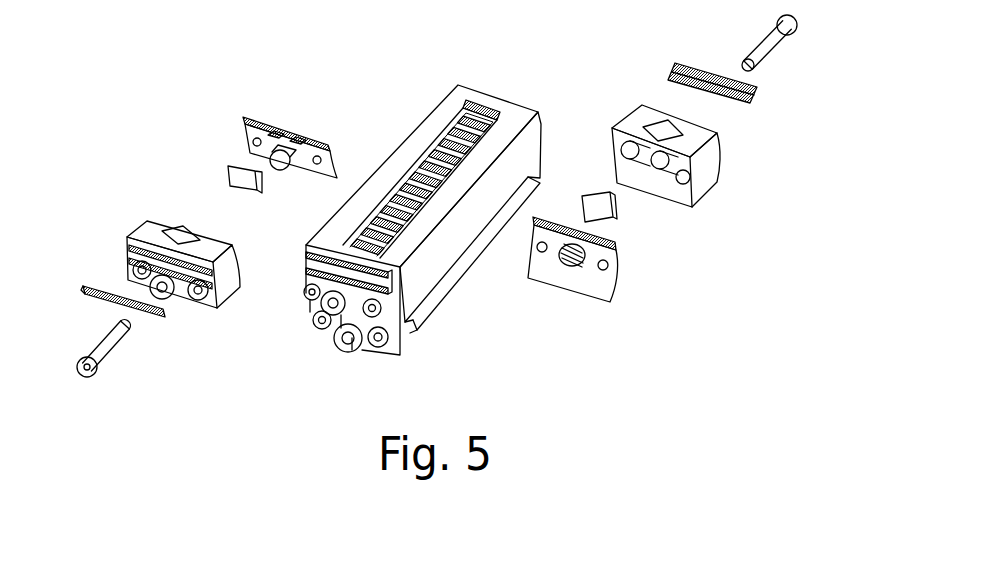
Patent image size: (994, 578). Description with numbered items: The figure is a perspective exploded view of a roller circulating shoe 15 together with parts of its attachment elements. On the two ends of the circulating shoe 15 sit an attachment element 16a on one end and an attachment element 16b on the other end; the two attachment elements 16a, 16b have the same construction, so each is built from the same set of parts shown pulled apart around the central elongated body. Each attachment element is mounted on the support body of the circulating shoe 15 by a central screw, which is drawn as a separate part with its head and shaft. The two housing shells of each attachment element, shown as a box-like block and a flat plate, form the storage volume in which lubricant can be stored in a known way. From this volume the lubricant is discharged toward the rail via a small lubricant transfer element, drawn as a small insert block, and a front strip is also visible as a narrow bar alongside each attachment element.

The circulating shoe 15 is at (500, 88).
The attachment element 16a is at (322, 110).
The attachment element 16b is at (560, 313).